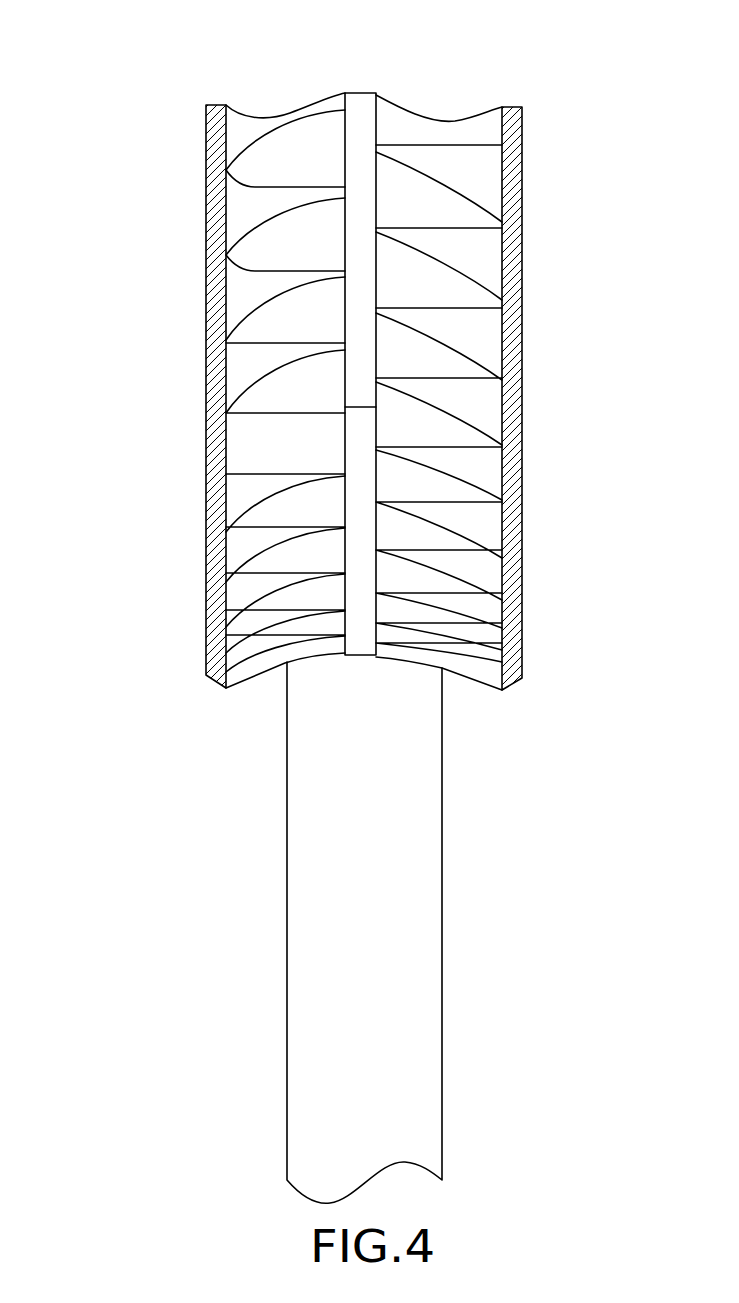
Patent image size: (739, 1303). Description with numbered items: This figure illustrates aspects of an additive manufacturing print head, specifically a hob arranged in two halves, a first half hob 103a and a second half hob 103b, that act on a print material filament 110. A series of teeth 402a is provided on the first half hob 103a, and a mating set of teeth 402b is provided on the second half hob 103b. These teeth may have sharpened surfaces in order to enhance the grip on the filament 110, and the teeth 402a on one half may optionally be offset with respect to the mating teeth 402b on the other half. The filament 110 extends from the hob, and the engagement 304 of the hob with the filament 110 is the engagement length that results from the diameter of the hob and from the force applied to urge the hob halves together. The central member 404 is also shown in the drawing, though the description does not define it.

The central shaft 404 is at (362, 92).
The teeth 402a is at (258, 190).
The teeth 402b is at (465, 312).
The half hob 103a is at (206, 368).
The half hob 103b is at (522, 172).
The engagement 304 is at (442, 667).
The print material filament 110 is at (442, 932).